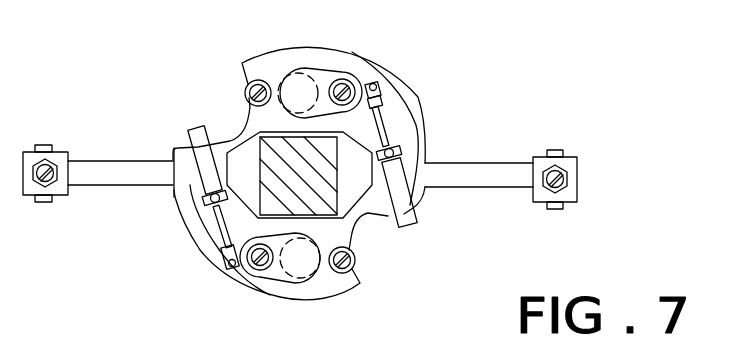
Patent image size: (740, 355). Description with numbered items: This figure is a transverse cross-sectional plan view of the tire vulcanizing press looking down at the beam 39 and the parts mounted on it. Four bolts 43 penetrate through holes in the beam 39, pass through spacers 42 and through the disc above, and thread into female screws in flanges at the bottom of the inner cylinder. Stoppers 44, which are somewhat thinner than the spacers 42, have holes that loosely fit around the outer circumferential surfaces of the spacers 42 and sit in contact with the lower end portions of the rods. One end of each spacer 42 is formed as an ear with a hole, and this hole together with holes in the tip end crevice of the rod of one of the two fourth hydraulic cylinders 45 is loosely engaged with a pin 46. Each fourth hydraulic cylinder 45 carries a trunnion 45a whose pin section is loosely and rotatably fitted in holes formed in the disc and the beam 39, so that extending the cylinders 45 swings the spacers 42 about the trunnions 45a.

The beam 39 is at (426, 147).
The spacer 42 is at (256, 79).
The bolt 43 is at (241, 64).
The stopper 44 is at (322, 68).
The fourth hydraulic cylinder 45 is at (176, 197).
The trunnion 45a is at (190, 236).
The pin 46 is at (226, 271).